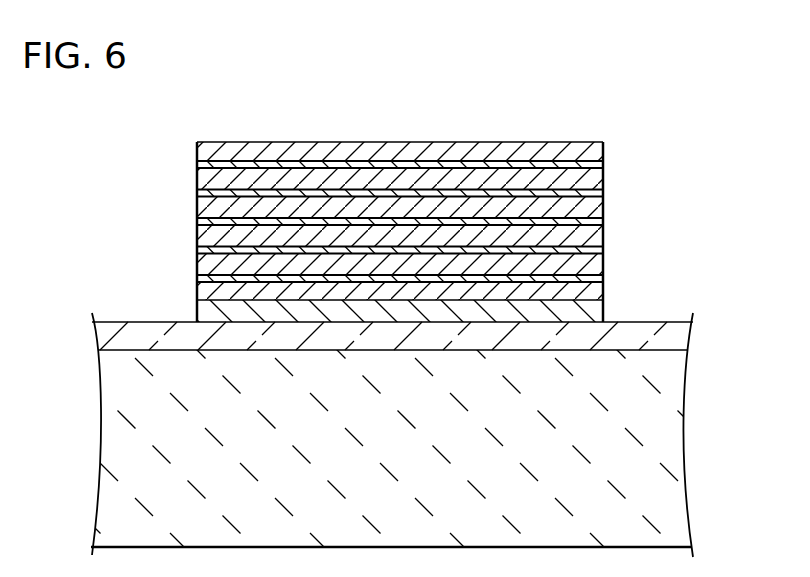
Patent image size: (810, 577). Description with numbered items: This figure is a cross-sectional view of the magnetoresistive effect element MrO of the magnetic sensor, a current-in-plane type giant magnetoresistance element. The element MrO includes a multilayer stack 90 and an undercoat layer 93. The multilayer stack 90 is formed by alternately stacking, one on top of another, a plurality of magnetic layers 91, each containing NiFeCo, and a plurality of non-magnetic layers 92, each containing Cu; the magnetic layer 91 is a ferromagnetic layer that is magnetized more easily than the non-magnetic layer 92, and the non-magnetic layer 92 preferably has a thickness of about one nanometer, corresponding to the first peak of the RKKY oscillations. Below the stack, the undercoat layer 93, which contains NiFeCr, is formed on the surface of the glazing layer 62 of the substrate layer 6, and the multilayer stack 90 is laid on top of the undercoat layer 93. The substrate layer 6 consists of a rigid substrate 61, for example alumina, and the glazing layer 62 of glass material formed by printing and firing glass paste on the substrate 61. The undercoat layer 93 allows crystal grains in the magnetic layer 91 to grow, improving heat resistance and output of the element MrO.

The substrate layer 6 is at (745, 328).
The substrate 61 is at (660, 402).
The glazing layer 62 is at (672, 338).
The multilayer stack 90 is at (118, 120).
The magnetic layer 91 is at (197, 145).
The non-magnetic layer 92 is at (197, 164).
The undercoat layer 93 is at (597, 313).
The magnetoresistive effect element MrO is at (592, 152).